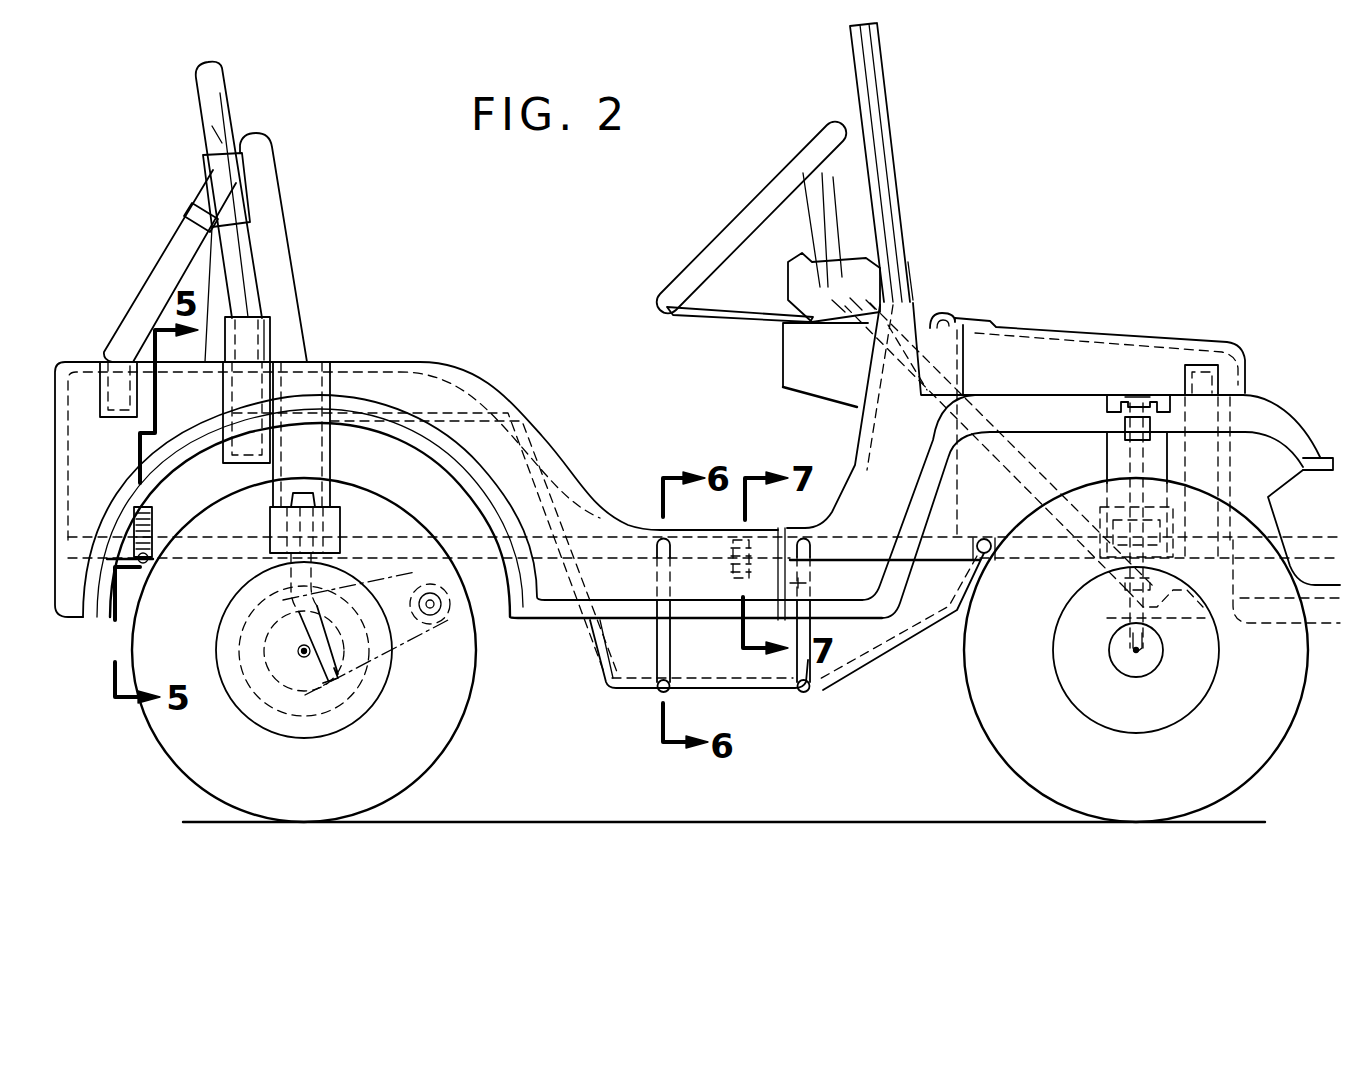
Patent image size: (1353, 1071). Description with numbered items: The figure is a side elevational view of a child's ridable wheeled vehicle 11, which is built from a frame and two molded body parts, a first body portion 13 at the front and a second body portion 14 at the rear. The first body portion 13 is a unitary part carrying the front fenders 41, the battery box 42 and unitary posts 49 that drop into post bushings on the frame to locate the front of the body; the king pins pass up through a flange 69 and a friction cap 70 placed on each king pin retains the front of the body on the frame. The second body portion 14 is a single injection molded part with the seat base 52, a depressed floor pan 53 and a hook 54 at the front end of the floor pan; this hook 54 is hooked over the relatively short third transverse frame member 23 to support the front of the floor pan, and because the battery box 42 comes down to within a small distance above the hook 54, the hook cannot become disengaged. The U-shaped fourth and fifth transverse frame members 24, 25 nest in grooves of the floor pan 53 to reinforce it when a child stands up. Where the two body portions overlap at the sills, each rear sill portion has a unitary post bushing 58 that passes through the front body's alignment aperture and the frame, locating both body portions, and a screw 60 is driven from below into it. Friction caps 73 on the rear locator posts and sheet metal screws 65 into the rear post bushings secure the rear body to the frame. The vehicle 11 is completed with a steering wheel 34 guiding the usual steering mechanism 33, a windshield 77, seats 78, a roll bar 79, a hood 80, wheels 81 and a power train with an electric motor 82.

The child's ridable wheeled vehicle 11 is at (1064, 238).
The first body portion 13 is at (900, 335).
The second body portion 14 is at (467, 388).
The third transverse frame member 23 is at (977, 570).
The fourth transverse frame member 24 is at (806, 694).
The fifth transverse frame member 25 is at (657, 692).
The steering mechanism 33 is at (1200, 637).
The steering wheel 34 is at (748, 207).
The front fenders 41 is at (1260, 415).
The battery box 42 is at (973, 535).
The unitary posts 49 is at (1107, 470).
The seat base 52 is at (417, 413).
The depressed floor pan 53 is at (728, 694).
The hook 54 is at (993, 545).
The post bushing 58 is at (738, 545).
The screw 60 is at (755, 573).
The sheet metal screw 65 is at (143, 562).
The flange 69 is at (1153, 393).
The friction cap 70 is at (1128, 393).
The friction caps 73 is at (323, 493).
The windshield 77 is at (900, 207).
The seats 78 is at (253, 157).
The roll bar 79 is at (213, 80).
The hood 80 is at (1060, 337).
The wheels 81 is at (1267, 703).
The electric motor 82 is at (453, 614).